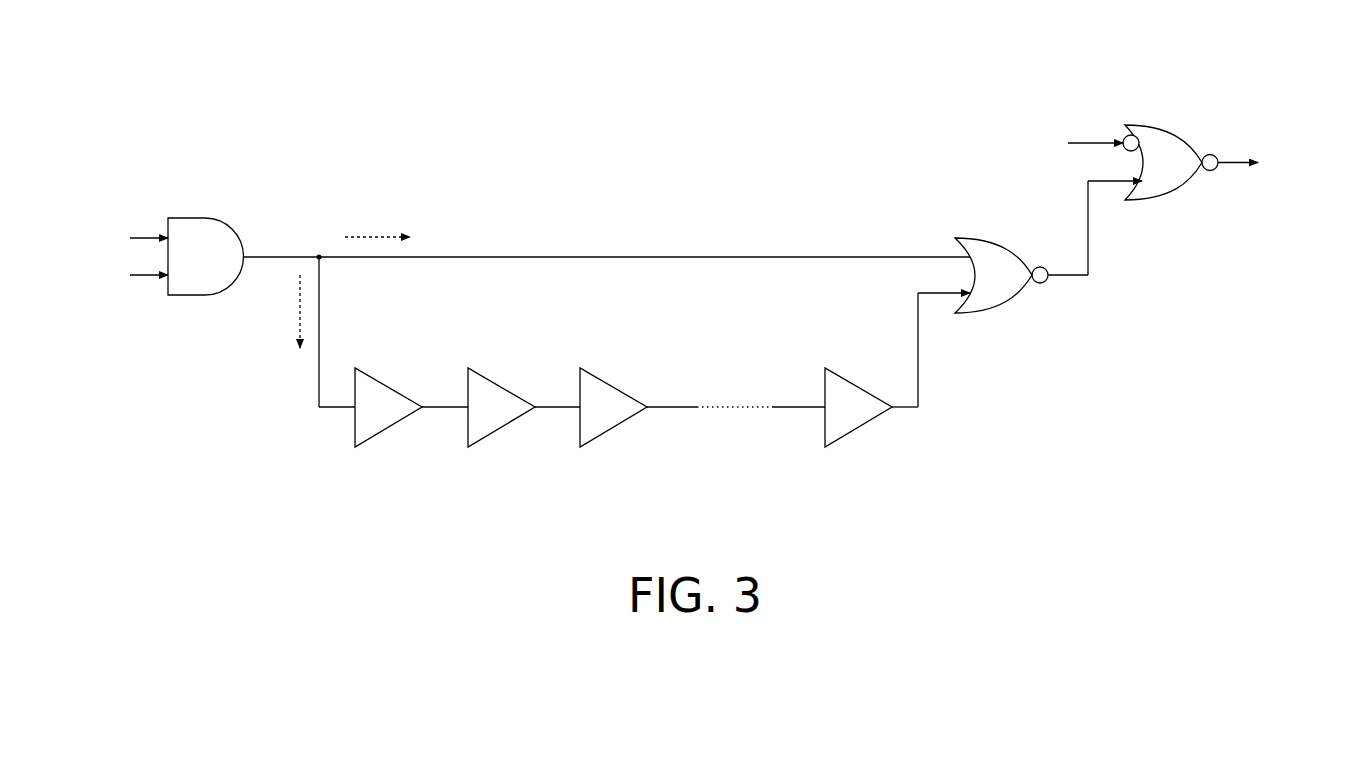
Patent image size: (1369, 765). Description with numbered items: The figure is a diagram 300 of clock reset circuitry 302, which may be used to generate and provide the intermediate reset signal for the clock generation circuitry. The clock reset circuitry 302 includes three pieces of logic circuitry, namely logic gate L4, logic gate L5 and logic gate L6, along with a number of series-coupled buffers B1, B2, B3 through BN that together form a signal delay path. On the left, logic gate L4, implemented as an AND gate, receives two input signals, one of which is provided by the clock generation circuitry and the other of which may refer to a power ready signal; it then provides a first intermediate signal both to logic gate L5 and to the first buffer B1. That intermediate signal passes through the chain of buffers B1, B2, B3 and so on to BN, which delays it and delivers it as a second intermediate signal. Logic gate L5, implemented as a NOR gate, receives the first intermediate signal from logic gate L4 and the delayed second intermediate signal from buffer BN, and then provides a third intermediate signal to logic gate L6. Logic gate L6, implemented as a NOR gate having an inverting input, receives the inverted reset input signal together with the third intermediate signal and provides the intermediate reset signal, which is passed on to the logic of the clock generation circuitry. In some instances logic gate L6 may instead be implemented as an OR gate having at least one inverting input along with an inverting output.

The diagram 300 is at (701, 225).
The clock reset circuitry 302 is at (701, 240).
The logic gate L4 is at (205, 256).
The logic gate L5 is at (1001, 275).
The logic gate L6 is at (1170, 162).
The first buffer B1 is at (388, 407).
The buffer B2 is at (501, 407).
The buffer B3 is at (613, 407).
The buffer BN is at (858, 407).